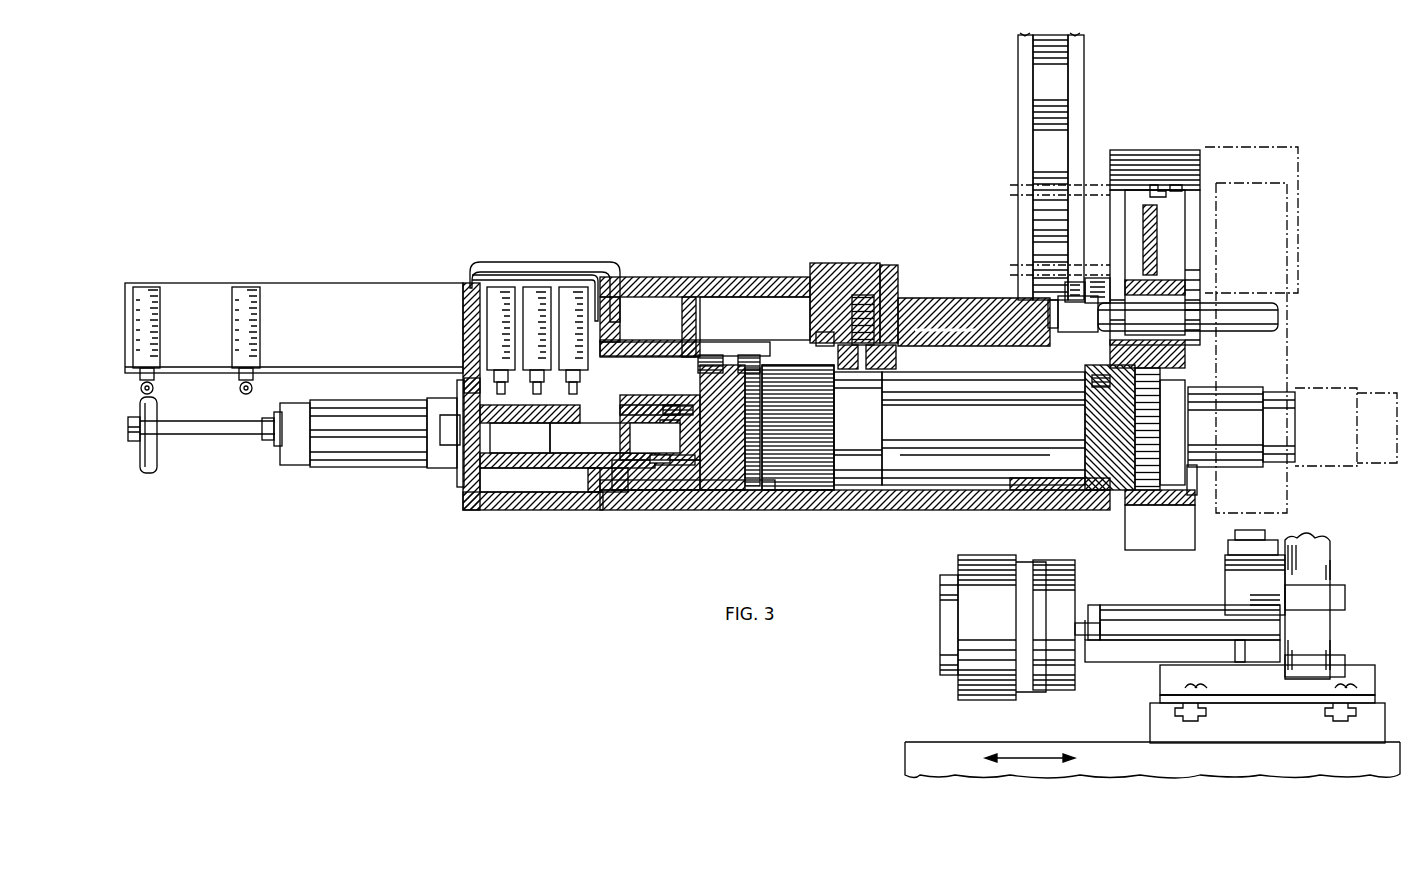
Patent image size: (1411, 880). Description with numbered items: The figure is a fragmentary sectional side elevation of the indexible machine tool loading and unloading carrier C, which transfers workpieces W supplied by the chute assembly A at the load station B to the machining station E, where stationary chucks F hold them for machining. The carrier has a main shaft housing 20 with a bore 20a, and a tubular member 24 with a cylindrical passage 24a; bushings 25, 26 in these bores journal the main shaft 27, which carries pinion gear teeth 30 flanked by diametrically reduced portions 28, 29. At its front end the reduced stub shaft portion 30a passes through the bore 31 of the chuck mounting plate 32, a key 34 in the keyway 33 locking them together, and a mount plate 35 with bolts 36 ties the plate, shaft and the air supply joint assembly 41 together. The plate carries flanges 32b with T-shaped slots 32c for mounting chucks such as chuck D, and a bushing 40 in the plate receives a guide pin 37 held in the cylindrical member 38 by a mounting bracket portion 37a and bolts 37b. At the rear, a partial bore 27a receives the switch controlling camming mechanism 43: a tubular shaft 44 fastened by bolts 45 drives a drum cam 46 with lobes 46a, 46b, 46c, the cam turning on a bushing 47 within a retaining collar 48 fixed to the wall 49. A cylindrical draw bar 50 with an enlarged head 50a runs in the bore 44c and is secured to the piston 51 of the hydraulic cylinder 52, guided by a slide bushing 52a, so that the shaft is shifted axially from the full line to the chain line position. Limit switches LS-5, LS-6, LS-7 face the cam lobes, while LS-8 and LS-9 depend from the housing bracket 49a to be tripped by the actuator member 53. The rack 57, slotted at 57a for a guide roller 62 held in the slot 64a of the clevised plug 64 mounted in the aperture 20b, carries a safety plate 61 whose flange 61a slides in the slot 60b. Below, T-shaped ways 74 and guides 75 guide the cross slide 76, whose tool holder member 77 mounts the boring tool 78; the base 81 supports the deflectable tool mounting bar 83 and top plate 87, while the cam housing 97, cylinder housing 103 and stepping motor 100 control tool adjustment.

The main shaft housing 20 is at (735, 226).
The bore 20a is at (707, 508).
The aperture 20b is at (888, 268).
The tubular member 24 is at (1020, 494).
The cylindrical passage 24a is at (972, 500).
The bushing 25 is at (755, 508).
The bushing 26 is at (1077, 492).
The main shaft 27 is at (712, 355).
The partial bore 27a is at (650, 488).
The diametrically reduced portion 28 is at (743, 358).
The diametrically reduced portion 29 is at (878, 498).
The pinion gear teeth 30 is at (822, 496).
The reduced stub shaft portion 30a is at (1076, 436).
The bore 31 is at (1155, 466).
The chuck mounting plate 32 is at (1152, 354).
The flanges 32b is at (1189, 192).
The T-shaped slots 32c is at (1157, 180).
The keyway 33 is at (1093, 395).
The key 34 is at (1065, 400).
The mount plate 35 is at (1160, 520).
The bolts 36 is at (1197, 480).
The guide pin 37 is at (1214, 315).
The mounting bracket portion 37a is at (1140, 278).
The bolts 37b is at (1075, 283).
The cylindrical member 38 is at (973, 302).
The bushing 40 is at (1155, 283).
The air supply joint assembly 41 is at (1240, 387).
The switch controlling camming mechanism 43 is at (520, 482).
The tubular shaft 44 is at (466, 485).
The bore 44c is at (600, 434).
The bolts 45 is at (722, 427).
The drum cam 46 is at (550, 492).
The cam lobe 46a is at (460, 389).
The cam lobe 46b is at (515, 407).
The cam lobe 46c is at (564, 407).
The bushing 47 is at (620, 500).
The retaining collar 48 is at (607, 455).
The wall 49 is at (610, 493).
The housing bracket 49a is at (358, 326).
The cylindrical draw bar 50 is at (508, 456).
The enlarged head 50a is at (668, 432).
The piston 51 is at (460, 436).
The double acting solenoid actuated hydraulic cylinder 52 is at (348, 462).
The slide bushing 52a is at (457, 475).
The actuator member 53 is at (157, 415).
The rack 57 is at (882, 368).
The slot 57a is at (903, 334).
The diametrically extending slot 60b is at (818, 343).
The safety plate 61 is at (838, 360).
The flange 61a is at (820, 322).
The guide roller 62 is at (856, 294).
The clevised plug 64 is at (827, 266).
The slot 64a is at (882, 363).
The T-shaped ways 74 is at (1188, 724).
The T-shaped guides 75 is at (1192, 718).
The cross slide 76 is at (1162, 688).
The tool holder member 77 is at (1121, 616).
The boring tool 78 is at (1081, 618).
The base 81 is at (1110, 663).
The deflectable tool mounting bar 83 is at (1184, 646).
The top plate 87 is at (1176, 624).
The cam housing 97 is at (1336, 623).
The stepping motor 100 is at (1331, 552).
The piston receiving cylinder housing 103 is at (1224, 573).
The chute assembly A is at (1084, 70).
The load station B is at (1218, 116).
The indexible machine tool loading and unloading carrier C is at (950, 172).
The chuck D is at (1172, 158).
The machining station E is at (902, 713).
The stationary workpiece holding chuck F is at (988, 628).
The workpiece W is at (1042, 81).
The limit switch LS-5 is at (578, 287).
The limit switch LS-6 is at (542, 287).
The limit switch LS-7 is at (493, 287).
The limit switch LS-8 is at (250, 284).
The limit switch LS-9 is at (152, 284).